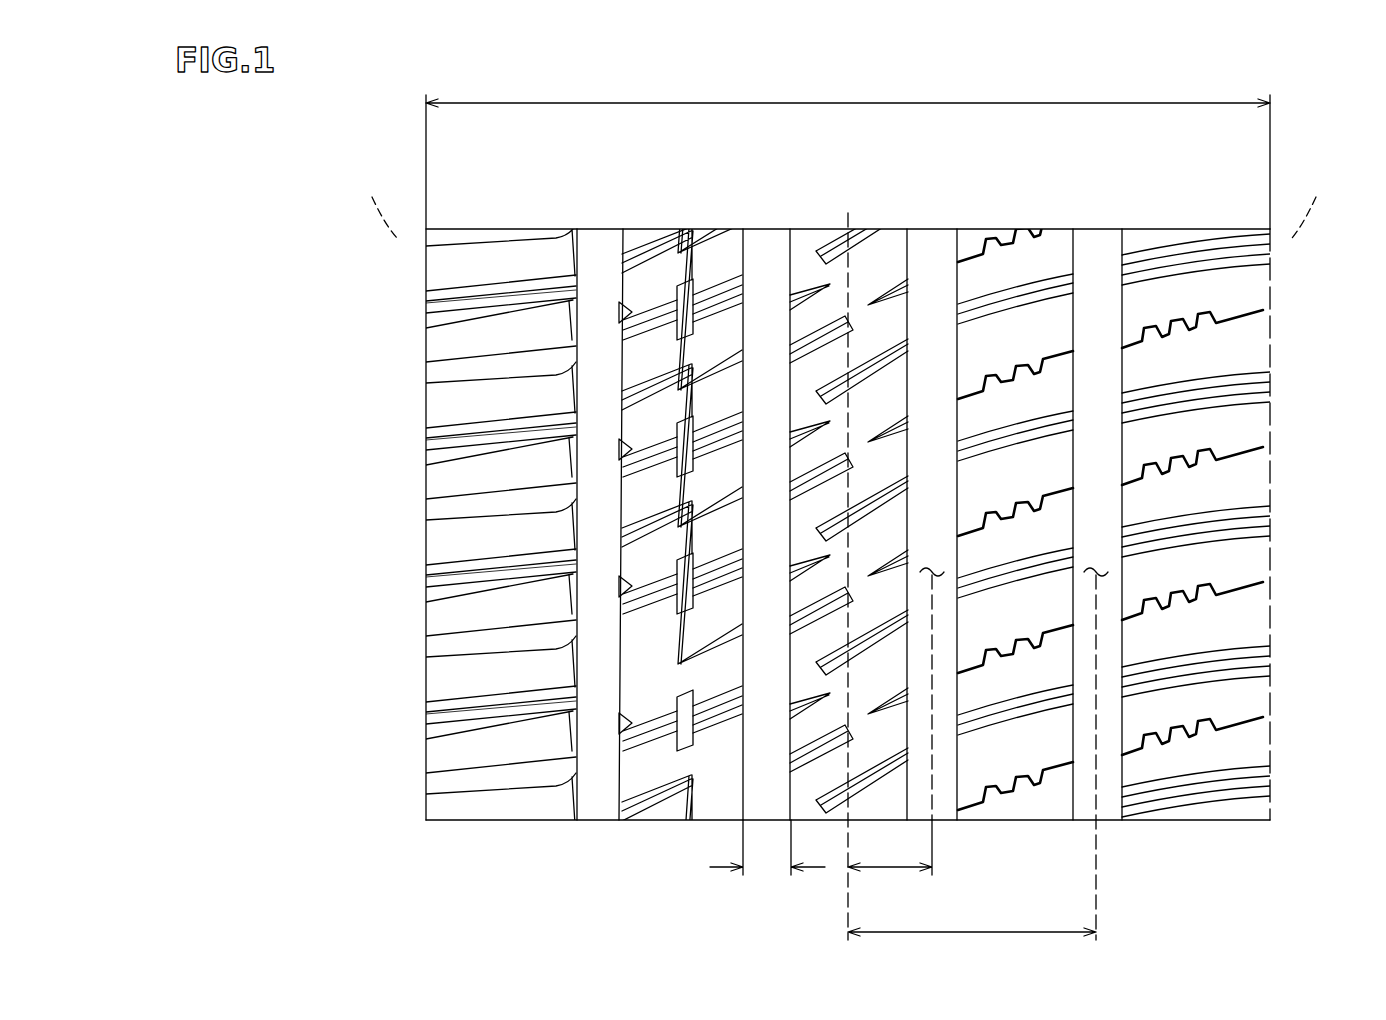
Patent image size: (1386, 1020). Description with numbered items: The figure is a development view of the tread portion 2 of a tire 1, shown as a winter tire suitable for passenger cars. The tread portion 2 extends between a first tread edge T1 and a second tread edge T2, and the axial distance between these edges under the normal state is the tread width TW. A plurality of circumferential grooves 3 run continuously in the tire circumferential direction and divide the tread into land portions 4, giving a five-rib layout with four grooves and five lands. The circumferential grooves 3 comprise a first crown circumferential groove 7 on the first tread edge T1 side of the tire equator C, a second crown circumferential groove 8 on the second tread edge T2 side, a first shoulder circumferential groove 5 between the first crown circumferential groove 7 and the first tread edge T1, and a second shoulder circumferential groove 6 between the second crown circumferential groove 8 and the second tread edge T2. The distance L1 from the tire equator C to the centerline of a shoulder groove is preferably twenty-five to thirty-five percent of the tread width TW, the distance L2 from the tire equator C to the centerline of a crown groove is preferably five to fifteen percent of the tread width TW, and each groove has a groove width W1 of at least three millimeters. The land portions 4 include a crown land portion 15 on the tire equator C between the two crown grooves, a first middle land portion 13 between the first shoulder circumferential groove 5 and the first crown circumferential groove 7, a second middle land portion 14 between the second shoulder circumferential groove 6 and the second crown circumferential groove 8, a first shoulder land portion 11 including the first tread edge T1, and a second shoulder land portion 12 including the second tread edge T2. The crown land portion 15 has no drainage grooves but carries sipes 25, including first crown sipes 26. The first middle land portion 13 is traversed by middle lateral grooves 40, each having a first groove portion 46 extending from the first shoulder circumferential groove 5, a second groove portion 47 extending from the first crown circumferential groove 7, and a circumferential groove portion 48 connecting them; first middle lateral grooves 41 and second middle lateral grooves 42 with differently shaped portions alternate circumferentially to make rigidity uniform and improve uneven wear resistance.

The tire 1 is at (1012, 192).
The tread portion 2 is at (702, 172).
The circumferential grooves 3 is at (1105, 526).
The land portions 4 is at (830, 486).
The first shoulder circumferential groove 5 is at (605, 247).
The second shoulder circumferential groove 6 is at (1108, 254).
The first crown circumferential groove 7 is at (785, 239).
The second crown circumferential groove 8 is at (932, 257).
The first shoulder land portion 11 is at (503, 255).
The second shoulder land portion 12 is at (1175, 285).
The first middle land portion 13 is at (498, 514).
The second middle land portion 14 is at (1053, 255).
The crown land portion 15 is at (1073, 476).
The sipes 25 is at (885, 627).
The first crown sipes 26 is at (810, 433).
The middle lateral grooves 40 is at (498, 493).
The first middle lateral grooves 41 is at (644, 456).
The second middle lateral grooves 42 is at (643, 316).
The first groove portion 46 is at (642, 593).
The second groove portion 47 is at (712, 591).
The circumferential groove portion 48 is at (678, 599).
The tread width TW is at (848, 89).
The tire equator C is at (848, 556).
The groove width W1 is at (767, 860).
The distance L1 is at (972, 947).
The distance L2 is at (896, 734).
The first tread edge T1 is at (374, 202).
The second tread edge T2 is at (1314, 202).